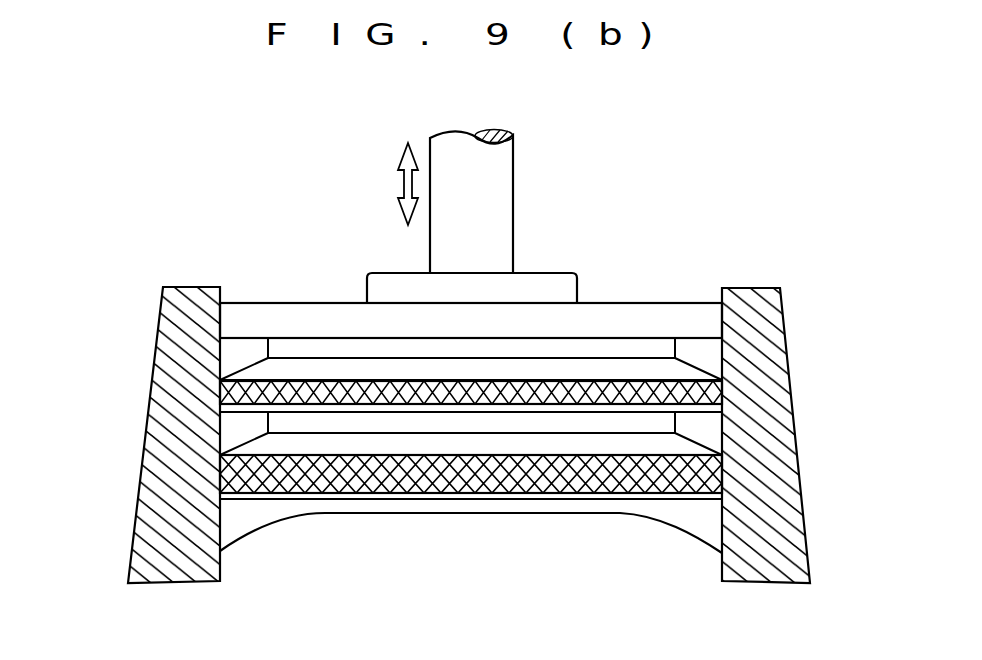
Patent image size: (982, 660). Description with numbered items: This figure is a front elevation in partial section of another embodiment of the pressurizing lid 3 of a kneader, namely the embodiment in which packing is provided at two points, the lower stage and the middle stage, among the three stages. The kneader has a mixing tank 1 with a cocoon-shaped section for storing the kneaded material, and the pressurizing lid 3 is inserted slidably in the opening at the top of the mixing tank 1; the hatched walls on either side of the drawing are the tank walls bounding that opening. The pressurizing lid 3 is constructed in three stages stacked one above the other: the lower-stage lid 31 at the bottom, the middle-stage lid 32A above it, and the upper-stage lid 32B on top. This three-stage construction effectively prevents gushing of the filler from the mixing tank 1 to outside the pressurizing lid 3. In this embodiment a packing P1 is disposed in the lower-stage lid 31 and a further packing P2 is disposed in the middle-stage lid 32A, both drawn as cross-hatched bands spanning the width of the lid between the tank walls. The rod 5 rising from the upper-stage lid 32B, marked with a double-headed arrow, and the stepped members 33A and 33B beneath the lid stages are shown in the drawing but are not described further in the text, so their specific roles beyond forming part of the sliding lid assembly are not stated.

The mixing tank 1 is at (595, 618).
The pressurizing lid 3 is at (253, 278).
The pressing rod 5 is at (500, 173).
The lower-stage lid 31 is at (375, 518).
The middle-stage lid 32A is at (629, 372).
The upper-stage lid 32B is at (304, 288).
The lower spacer 33A is at (245, 433).
The upper spacer 33B is at (245, 358).
The packing P1 is at (495, 480).
The packing P2 is at (595, 385).